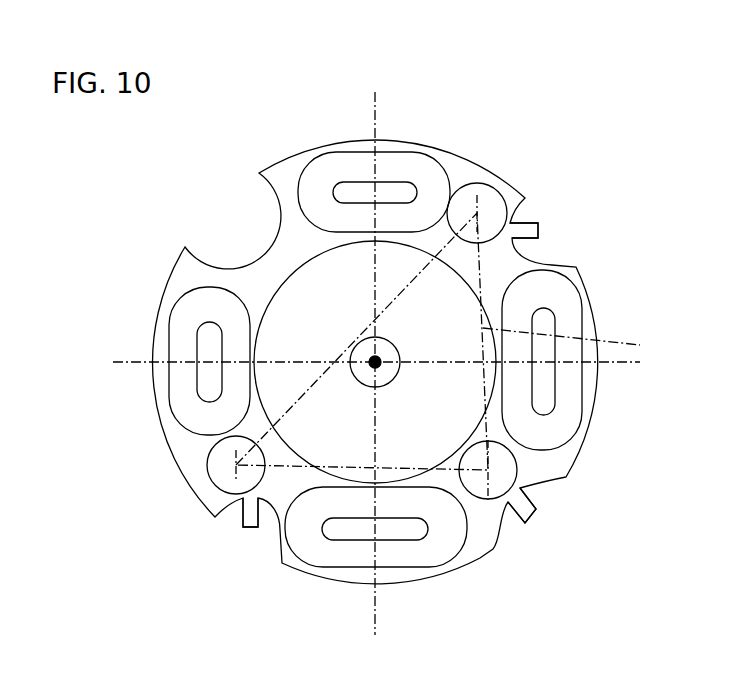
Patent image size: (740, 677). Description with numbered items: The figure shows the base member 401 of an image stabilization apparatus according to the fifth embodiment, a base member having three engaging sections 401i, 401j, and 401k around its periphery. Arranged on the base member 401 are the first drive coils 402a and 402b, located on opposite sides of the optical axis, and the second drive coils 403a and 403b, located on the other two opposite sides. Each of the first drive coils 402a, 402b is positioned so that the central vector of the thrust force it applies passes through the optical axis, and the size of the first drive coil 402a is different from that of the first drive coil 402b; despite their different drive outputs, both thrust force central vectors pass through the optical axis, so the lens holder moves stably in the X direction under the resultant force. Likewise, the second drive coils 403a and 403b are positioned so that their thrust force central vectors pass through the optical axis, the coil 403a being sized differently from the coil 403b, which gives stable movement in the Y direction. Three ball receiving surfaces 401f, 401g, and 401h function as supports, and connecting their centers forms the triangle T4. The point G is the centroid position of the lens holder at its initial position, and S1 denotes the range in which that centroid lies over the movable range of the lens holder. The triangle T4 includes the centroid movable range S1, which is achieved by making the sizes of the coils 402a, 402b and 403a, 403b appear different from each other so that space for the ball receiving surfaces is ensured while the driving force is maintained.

The base member 401 is at (323, 145).
The second drive coil 403a is at (402, 163).
The second drive coil 403b is at (320, 557).
The first drive coil 402a is at (582, 313).
The first drive coil 402b is at (182, 328).
The ball receiving surface 401f is at (480, 183).
The ball receiving surface 401g is at (208, 474).
The ball receiving surface 401h is at (518, 470).
The engaging section 401i is at (542, 230).
The engaging section 401k is at (538, 512).
The engaging section 401j is at (242, 500).
The centroid movable range S1 is at (394, 386).
The centroid position G is at (381, 358).
The triangle T4 is at (580, 341).